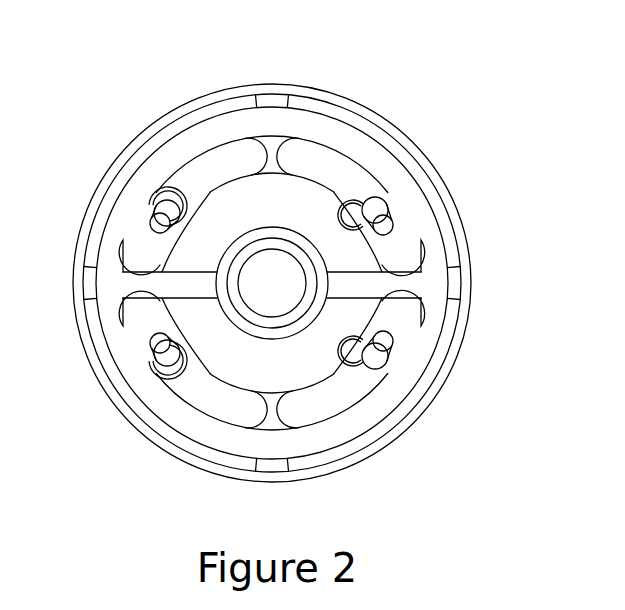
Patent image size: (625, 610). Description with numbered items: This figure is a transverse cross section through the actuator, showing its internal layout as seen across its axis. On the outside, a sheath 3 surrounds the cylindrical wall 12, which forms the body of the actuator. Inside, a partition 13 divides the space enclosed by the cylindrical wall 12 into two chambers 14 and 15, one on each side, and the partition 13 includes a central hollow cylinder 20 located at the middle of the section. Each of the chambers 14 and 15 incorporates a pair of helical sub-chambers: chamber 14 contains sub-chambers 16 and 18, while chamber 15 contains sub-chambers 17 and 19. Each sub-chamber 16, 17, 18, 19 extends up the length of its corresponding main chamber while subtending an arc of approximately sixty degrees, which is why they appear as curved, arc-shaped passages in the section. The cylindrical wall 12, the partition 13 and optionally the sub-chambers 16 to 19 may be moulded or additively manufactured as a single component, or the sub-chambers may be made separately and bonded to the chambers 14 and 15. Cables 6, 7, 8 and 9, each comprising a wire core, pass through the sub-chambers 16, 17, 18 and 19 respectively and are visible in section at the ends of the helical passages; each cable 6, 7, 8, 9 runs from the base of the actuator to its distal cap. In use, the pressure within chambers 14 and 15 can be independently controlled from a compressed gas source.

The sheath 3 is at (405, 133).
The cable 6 is at (158, 226).
The cable 7 is at (160, 341).
The cable 8 is at (384, 225).
The cable 9 is at (386, 341).
The cylindrical wall 12 is at (407, 190).
The partition 13 is at (417, 286).
The chamber 14 is at (282, 200).
The chamber 15 is at (268, 365).
The helical sub-chamber 16 is at (223, 166).
The helical sub-chamber 17 is at (222, 398).
The helical sub-chamber 18 is at (333, 167).
The helical sub-chamber 19 is at (338, 395).
The central hollow cylinder 20 is at (270, 280).